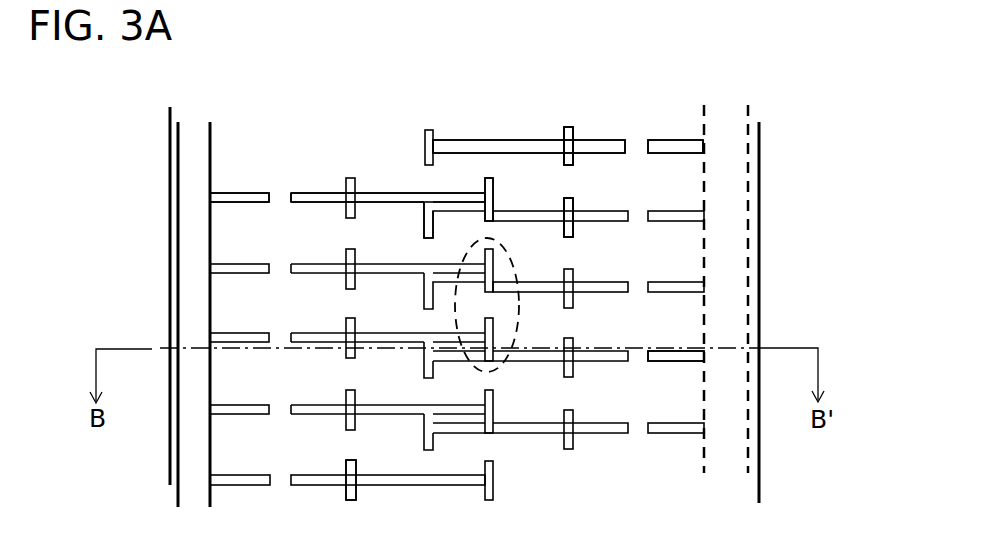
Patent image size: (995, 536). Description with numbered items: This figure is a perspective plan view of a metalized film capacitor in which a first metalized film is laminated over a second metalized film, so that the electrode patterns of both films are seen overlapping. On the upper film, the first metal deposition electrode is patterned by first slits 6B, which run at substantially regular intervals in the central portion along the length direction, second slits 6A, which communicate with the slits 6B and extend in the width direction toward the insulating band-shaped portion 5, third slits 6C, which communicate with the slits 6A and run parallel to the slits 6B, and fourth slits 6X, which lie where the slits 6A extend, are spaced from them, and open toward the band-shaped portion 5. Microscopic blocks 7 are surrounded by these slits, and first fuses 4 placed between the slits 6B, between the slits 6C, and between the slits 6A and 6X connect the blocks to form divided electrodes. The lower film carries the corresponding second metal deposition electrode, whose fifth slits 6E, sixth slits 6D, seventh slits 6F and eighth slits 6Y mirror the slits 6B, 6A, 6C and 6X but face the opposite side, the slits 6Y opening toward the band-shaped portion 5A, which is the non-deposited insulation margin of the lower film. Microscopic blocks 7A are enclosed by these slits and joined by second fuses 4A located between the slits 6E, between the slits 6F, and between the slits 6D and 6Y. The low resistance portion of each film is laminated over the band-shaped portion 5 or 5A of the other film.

The first fuses 4 is at (347, 237).
The second fuses 4A is at (430, 180).
The band-shaped portion 5 is at (185, 222).
The band-shaped portion 5A is at (733, 118).
The second slits 6A is at (387, 195).
The first slits 6B is at (493, 197).
The third slits 6C is at (347, 495).
The sixth slits 6D is at (482, 140).
The fifth slits 6E is at (430, 232).
The seventh slits 6F is at (568, 126).
The fourth slits 6X is at (229, 192).
The eighth slits 6Y is at (683, 140).
The microscopic blocks 7 is at (370, 303).
The microscopic blocks 7A is at (538, 342).